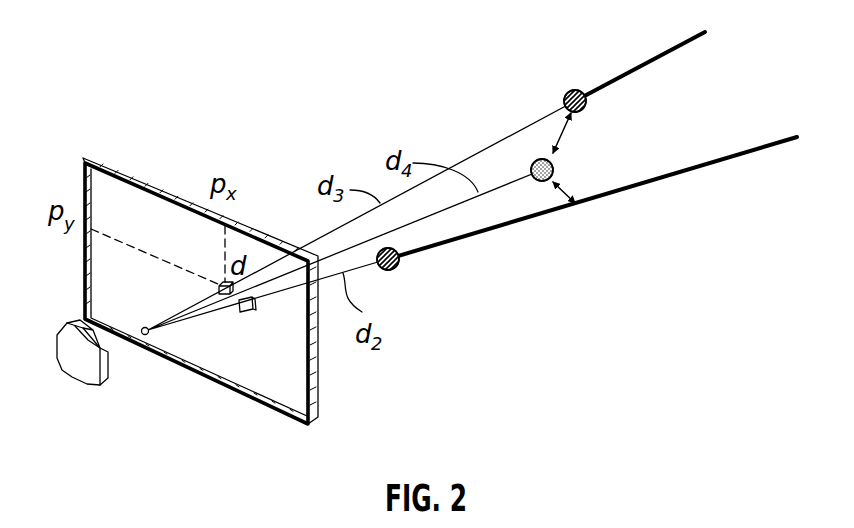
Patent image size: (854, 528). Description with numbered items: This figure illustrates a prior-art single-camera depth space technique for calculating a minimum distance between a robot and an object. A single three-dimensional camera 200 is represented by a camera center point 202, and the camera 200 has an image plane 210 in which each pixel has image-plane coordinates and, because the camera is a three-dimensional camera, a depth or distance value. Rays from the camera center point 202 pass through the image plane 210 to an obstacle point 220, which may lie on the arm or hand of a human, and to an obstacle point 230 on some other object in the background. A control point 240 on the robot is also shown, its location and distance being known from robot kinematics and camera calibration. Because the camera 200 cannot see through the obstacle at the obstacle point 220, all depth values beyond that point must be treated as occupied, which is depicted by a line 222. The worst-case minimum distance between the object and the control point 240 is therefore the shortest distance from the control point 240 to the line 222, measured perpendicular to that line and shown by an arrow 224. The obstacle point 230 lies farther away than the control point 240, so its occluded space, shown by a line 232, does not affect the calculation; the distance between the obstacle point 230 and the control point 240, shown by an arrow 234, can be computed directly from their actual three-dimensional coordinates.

The 3D camera 200 is at (83, 386).
The camera center point 202 is at (143, 327).
The image plane 210 is at (139, 158).
The obstacle point 220 is at (397, 267).
The line 222 is at (765, 145).
The arrow 224 is at (563, 192).
The obstacle point 230 is at (566, 97).
The line 232 is at (675, 46).
The arrow 234 is at (556, 140).
The control point 240 is at (533, 163).